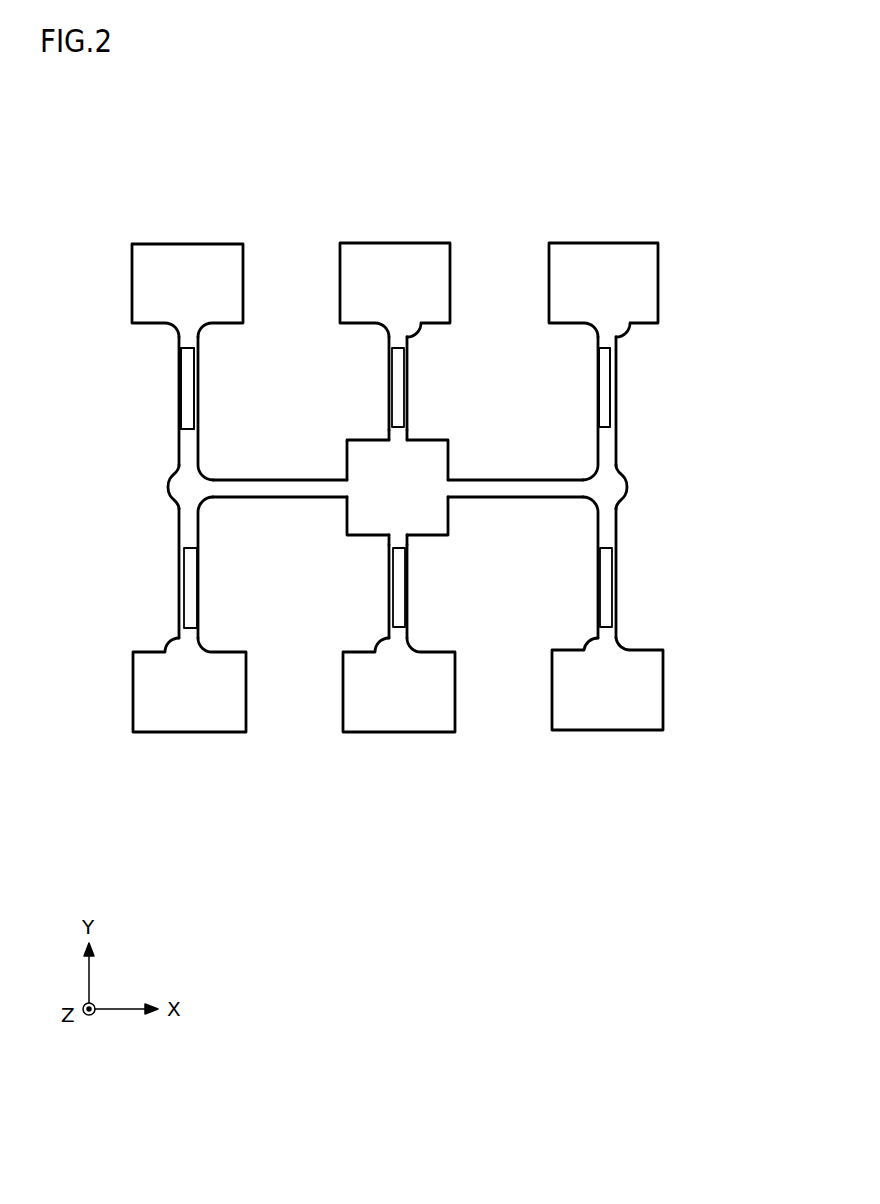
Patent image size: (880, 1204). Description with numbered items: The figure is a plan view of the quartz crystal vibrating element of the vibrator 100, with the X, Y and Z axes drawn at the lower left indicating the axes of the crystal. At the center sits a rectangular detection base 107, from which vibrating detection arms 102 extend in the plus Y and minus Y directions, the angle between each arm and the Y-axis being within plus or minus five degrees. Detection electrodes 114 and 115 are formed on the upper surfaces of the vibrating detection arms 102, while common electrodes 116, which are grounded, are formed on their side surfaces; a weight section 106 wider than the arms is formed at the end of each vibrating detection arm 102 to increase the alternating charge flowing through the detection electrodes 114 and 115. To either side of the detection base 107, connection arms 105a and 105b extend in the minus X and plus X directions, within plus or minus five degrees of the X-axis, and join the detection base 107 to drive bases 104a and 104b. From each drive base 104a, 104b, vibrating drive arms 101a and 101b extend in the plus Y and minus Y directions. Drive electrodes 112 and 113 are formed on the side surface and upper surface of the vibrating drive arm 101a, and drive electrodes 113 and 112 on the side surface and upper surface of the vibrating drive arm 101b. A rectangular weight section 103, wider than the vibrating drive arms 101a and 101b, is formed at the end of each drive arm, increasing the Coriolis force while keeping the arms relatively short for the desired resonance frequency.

The vibrator 100 is at (713, 131).
The vibrating drive arm 101a is at (640, 487).
The vibrating drive arm 101b is at (156, 487).
The vibrating detection arm 102 is at (397, 430).
The weight section 103 is at (135, 270).
The drive base 104a is at (618, 488).
The drive base 104b is at (175, 488).
The connection arm 105a is at (510, 488).
The connection arm 105b is at (262, 488).
The weight section 106 is at (416, 265).
The detection base 107 is at (363, 458).
The drive electrode 112 is at (188, 382).
The drive electrode 113 is at (185, 418).
The detection electrode 114 is at (398, 392).
The detection electrode 115 is at (400, 592).
The common electrode 116 is at (390, 383).